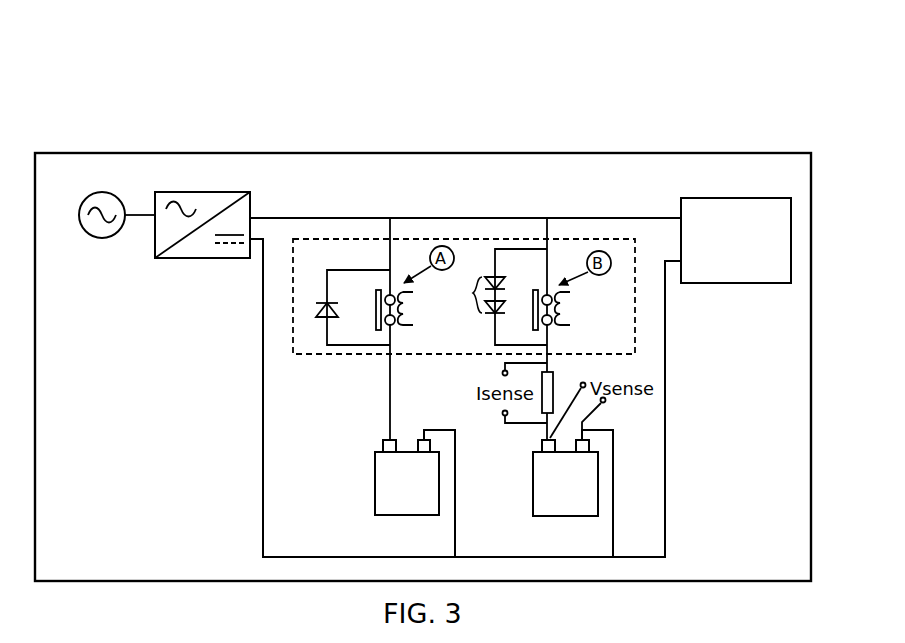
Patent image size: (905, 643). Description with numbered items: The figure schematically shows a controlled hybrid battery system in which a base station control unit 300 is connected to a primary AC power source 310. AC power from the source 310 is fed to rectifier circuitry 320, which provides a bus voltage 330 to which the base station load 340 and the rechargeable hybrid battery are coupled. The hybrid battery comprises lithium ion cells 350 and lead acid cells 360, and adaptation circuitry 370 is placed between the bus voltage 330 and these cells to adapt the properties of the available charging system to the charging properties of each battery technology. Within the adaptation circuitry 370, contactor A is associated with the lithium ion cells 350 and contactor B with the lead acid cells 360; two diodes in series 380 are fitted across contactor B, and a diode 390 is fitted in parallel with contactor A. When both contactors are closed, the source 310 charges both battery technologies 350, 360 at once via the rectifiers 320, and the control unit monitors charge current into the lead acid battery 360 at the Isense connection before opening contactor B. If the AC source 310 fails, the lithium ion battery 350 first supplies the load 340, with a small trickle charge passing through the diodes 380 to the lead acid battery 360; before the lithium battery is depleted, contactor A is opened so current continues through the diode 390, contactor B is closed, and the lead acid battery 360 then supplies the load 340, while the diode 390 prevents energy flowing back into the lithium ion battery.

The base station control unit 300 is at (521, 150).
The primary AC power source 310 is at (104, 298).
The rectifier circuitry 320 is at (240, 194).
The bus voltage 330 is at (414, 218).
The load 340 is at (737, 212).
The lithium ion cells 350 is at (406, 503).
The lead acid cells 360 is at (568, 503).
The adaptation circuitry 370 is at (618, 322).
The two diodes in series 380 is at (473, 293).
The diode 390 is at (320, 318).